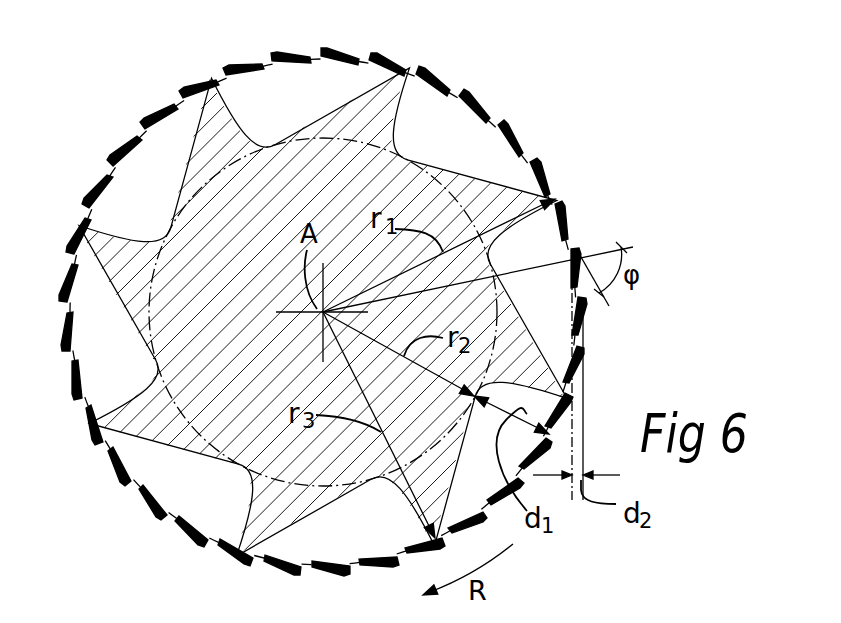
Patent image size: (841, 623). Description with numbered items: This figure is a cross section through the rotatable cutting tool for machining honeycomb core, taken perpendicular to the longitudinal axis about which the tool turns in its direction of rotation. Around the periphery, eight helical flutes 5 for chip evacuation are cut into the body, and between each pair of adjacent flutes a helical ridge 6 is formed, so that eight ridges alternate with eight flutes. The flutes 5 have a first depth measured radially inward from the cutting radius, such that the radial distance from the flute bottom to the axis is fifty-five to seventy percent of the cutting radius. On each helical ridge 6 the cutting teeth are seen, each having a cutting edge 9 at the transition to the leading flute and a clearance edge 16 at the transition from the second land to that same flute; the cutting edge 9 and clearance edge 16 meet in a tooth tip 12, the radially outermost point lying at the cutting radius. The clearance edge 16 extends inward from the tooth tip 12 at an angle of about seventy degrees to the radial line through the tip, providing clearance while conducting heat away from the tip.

The helical flute 5 is at (276, 145).
The helical ridge 6 is at (413, 69).
The cutting edge 9 is at (578, 300).
The tooth tip 12 is at (576, 250).
The clearance edge 16 is at (573, 246).